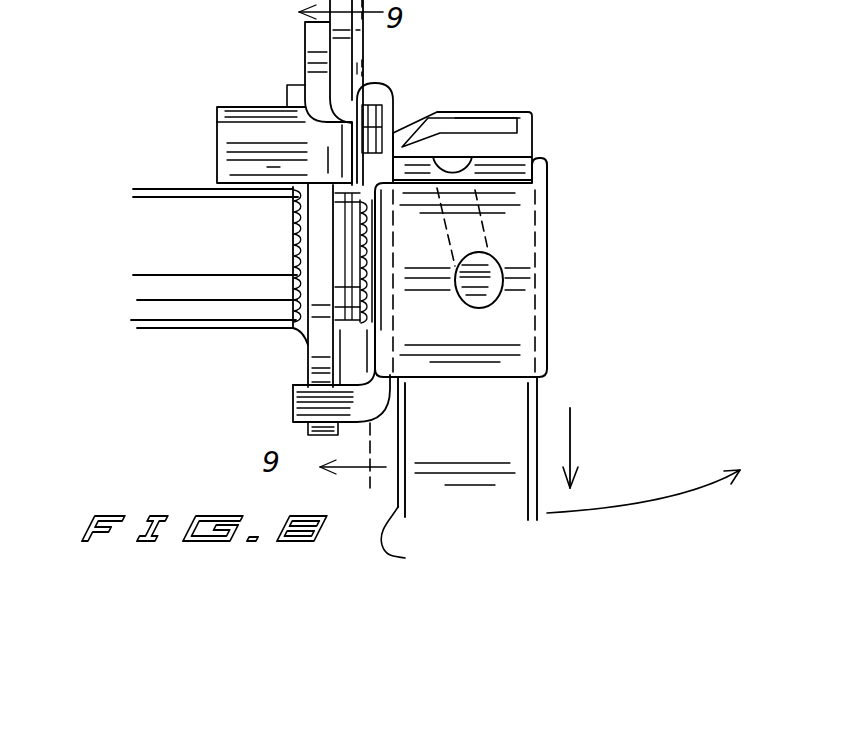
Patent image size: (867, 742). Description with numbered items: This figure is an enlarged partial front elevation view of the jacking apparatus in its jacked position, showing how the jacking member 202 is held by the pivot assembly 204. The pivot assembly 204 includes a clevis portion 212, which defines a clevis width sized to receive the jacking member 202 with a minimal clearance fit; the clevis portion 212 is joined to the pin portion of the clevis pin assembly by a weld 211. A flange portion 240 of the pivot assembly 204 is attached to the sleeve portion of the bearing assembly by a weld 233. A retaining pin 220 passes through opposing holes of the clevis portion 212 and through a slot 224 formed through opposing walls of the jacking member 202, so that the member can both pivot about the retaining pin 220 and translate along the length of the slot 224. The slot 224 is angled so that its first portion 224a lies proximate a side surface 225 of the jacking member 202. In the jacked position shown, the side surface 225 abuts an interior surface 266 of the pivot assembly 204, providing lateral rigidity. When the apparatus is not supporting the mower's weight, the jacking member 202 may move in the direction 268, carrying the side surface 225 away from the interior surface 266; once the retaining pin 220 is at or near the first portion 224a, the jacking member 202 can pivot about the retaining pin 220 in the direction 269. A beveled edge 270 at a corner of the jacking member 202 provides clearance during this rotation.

The jacking member 202 is at (537, 393).
The pivot assembly 204 is at (131, 181).
The weld 211 is at (367, 320).
The clevis portion 212 is at (547, 226).
The retaining pin 220 is at (500, 297).
The slot 224 is at (470, 228).
The first portion of the slot 224a is at (490, 163).
The side surface 225 is at (421, 543).
The weld 233 is at (295, 252).
The flange portion 240 is at (305, 50).
The interior surface 266 is at (383, 282).
The direction 268 is at (570, 430).
The direction 269 is at (648, 502).
The beveled edge 270 is at (415, 117).